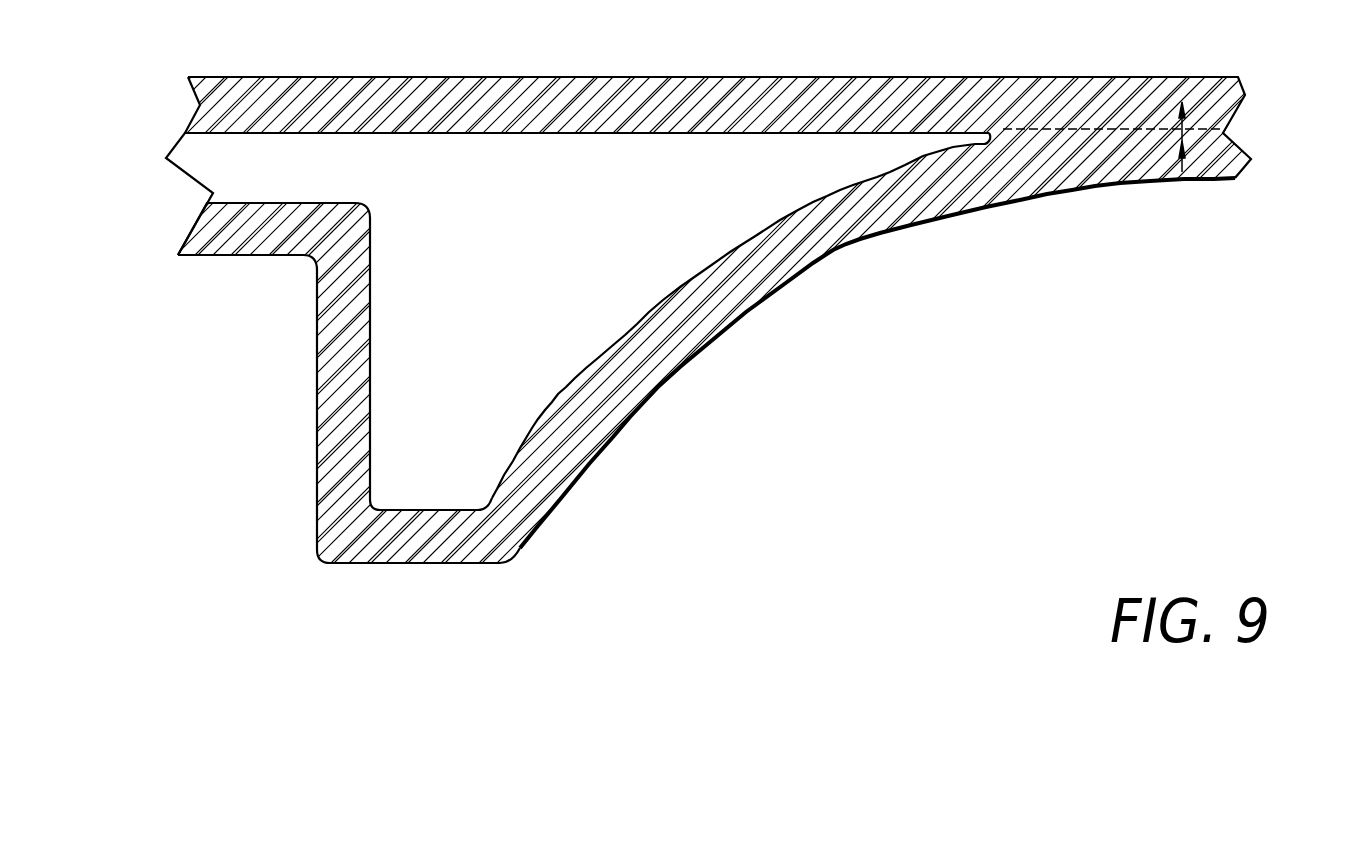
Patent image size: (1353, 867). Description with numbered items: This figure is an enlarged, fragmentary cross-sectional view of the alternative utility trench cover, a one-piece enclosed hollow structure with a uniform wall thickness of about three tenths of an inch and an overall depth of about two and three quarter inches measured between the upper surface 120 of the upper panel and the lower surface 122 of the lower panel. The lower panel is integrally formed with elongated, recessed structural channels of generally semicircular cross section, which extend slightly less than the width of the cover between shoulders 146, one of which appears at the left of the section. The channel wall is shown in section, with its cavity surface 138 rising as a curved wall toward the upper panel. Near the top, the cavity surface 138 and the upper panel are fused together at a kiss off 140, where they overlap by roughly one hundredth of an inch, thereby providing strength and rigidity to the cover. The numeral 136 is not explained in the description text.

The upper surface 120 is at (866, 77).
The lower surface 122 is at (850, 253).
The channel base 136 is at (397, 565).
The cavity surface 138 is at (625, 336).
The kiss off 140 is at (982, 140).
The shoulder 146 is at (300, 258).